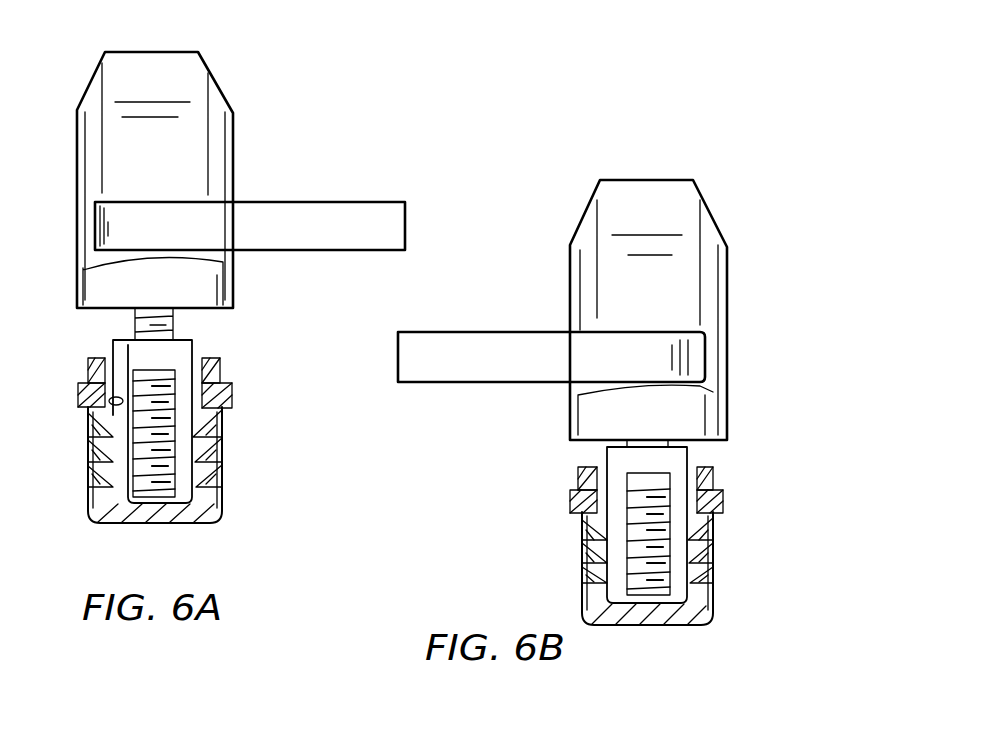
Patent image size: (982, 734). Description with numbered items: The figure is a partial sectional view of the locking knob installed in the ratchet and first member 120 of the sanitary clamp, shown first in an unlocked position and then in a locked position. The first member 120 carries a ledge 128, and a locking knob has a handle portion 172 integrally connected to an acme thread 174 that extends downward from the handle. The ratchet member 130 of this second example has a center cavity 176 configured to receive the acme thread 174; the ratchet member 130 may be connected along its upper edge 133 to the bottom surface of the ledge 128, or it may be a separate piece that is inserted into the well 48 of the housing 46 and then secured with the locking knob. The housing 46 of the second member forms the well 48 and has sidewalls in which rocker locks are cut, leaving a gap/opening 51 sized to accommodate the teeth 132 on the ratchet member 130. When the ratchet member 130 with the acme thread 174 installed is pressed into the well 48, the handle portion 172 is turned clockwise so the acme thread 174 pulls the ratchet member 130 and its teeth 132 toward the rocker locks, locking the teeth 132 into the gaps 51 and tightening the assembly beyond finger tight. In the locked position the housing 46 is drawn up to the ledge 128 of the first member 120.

In FIG. 6A, the first member 120 is at (233, 112).
In FIG. 6B, the first member 120 is at (570, 258).
In FIG. 6A, the handle portion 172 is at (276, 202).
In FIG. 6B, the handle portion 172 is at (528, 332).
In FIG. 6A, the ledge 128 is at (220, 281).
In FIG. 6B, the ledge 128 is at (592, 410).
In FIG. 6A, the upper edge 133 is at (182, 338).
In FIG. 6A, the ratchet member 130 is at (113, 342).
In FIG. 6B, the ratchet member 130 is at (616, 530).
In FIG. 6A, the acme thread 174 is at (152, 450).
In FIG. 6B, the acme thread 174 is at (635, 487).
In FIG. 6A, the center cavity 176 is at (136, 475).
In FIG. 6A, the housing 46 is at (203, 517).
In FIG. 6B, the housing 46 is at (700, 612).
In FIG. 6A, the well 48 is at (82, 392).
In FIG. 6A, the gap/opening 51 is at (220, 374).
In FIG. 6B, the gap/opening 51 is at (713, 483).
In FIG. 6B, the teeth 132 is at (714, 560).